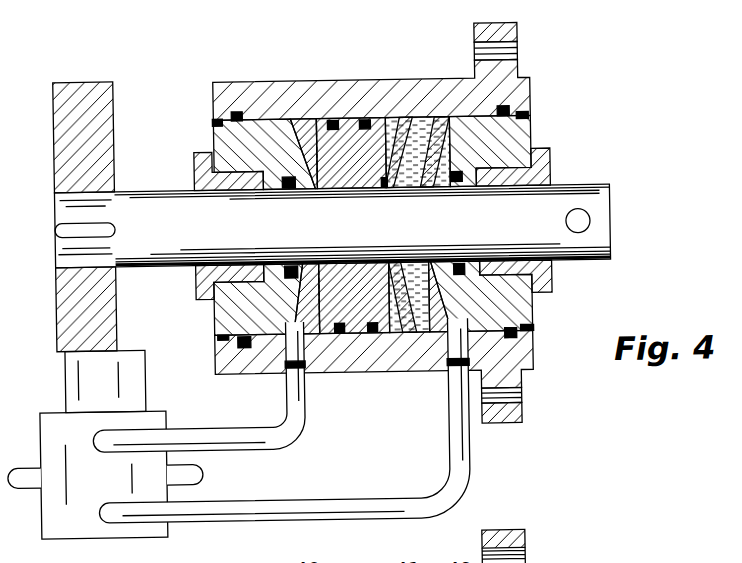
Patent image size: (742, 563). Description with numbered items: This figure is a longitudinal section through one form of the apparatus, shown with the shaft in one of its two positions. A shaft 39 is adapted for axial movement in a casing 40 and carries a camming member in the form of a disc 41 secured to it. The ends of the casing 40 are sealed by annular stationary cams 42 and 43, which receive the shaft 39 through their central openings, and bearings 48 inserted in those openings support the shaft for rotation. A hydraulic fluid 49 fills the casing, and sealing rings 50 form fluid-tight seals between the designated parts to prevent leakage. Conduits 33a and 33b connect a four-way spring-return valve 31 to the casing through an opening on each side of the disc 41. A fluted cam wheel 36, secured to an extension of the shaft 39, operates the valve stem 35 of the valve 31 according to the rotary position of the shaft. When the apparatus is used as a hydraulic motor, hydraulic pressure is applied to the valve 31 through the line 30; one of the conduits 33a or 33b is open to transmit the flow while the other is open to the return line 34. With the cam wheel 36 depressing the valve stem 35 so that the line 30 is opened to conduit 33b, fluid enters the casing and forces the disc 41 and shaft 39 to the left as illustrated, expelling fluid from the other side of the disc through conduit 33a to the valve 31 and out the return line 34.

The line 30 is at (26, 456).
The four-way spring-return valve 31 is at (162, 420).
The conduit 33a is at (301, 426).
The conduit 33b is at (452, 425).
The return line 34 is at (199, 474).
The valve stem 35 is at (132, 392).
The fluted cam wheel 36 is at (109, 118).
The shaft 39 is at (604, 199).
The casing 40 is at (280, 85).
The disc 41 is at (354, 126).
The stationary cam 42 is at (222, 307).
The stationary cam 43 is at (519, 311).
The bearings 48 is at (194, 164).
The hydraulic fluid 49 is at (445, 108).
The sealing rings 50 is at (292, 263).